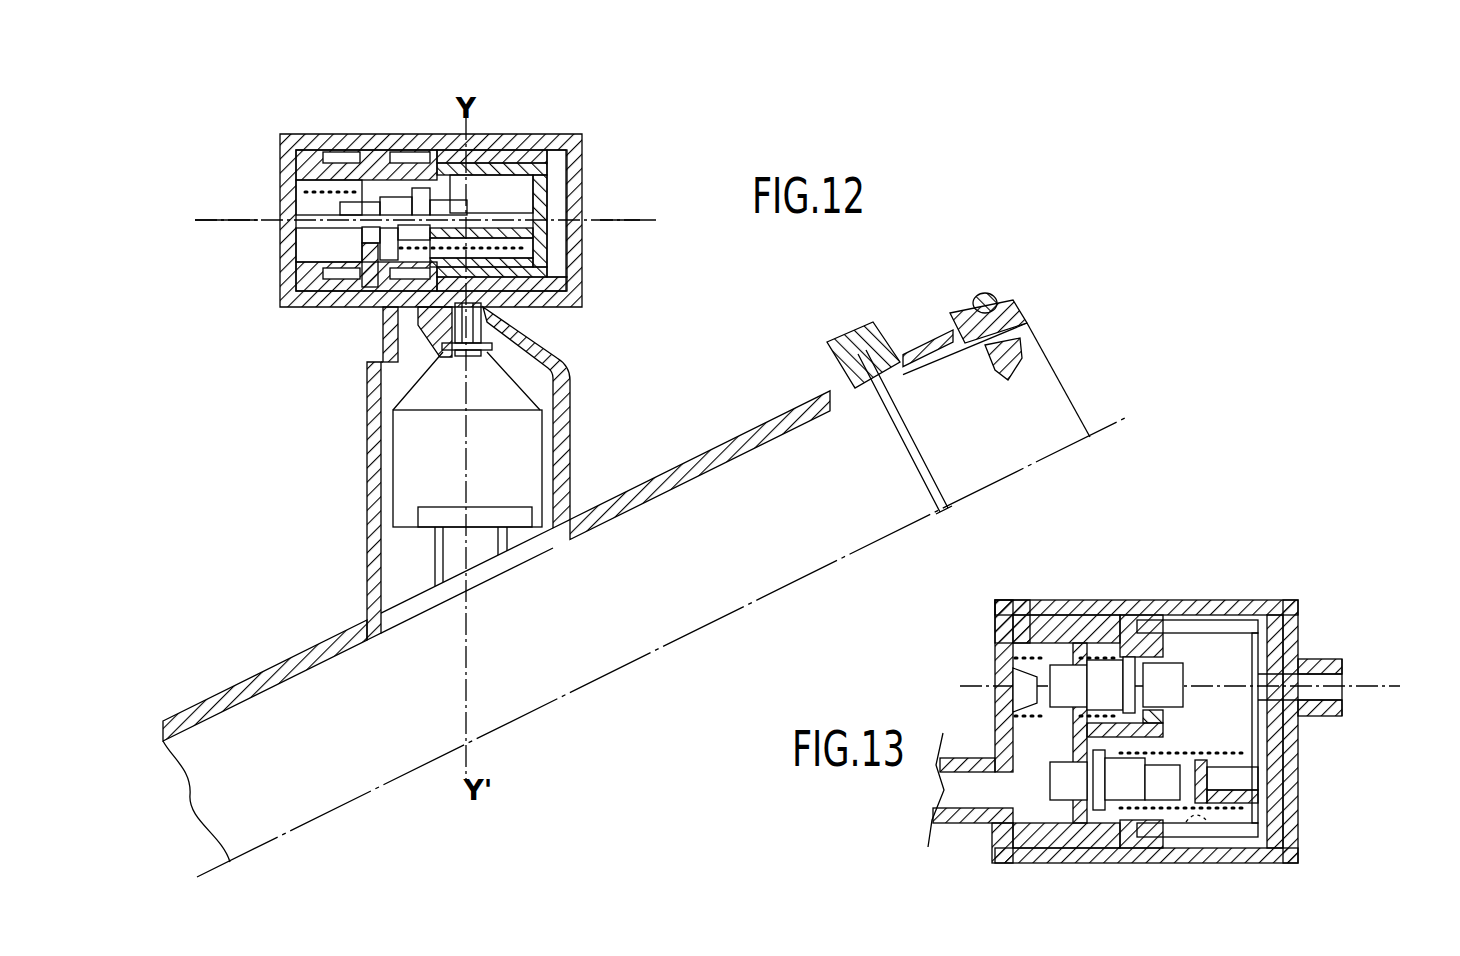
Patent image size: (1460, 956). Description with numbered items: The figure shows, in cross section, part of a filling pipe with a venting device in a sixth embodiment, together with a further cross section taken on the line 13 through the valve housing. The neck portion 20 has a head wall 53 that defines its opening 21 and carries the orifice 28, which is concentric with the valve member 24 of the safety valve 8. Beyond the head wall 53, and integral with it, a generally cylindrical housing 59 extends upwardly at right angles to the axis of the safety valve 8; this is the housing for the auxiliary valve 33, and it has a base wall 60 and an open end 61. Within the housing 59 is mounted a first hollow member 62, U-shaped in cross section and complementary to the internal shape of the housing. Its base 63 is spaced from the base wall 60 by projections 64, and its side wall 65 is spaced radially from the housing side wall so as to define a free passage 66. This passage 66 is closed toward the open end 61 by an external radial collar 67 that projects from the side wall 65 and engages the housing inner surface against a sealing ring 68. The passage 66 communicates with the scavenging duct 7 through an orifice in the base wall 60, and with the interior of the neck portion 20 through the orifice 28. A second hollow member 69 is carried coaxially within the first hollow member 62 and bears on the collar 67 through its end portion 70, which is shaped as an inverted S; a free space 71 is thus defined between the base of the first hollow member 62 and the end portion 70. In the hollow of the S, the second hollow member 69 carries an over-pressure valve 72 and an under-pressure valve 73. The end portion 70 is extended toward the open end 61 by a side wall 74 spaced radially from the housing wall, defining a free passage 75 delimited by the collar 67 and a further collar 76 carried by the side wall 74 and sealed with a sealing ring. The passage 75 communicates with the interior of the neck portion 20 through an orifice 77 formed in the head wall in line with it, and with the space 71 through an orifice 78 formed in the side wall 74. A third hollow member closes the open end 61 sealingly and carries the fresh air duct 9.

In FIG. 13, the scavenging duct 7 is at (1300, 667).
In FIG. 12, the safety valve 8 is at (345, 492).
In FIG. 13, the fresh air duct 9 is at (975, 772).
In FIG. 12, the section line 13— 13 is at (210, 217).
In FIG. 12, the neck portion 20 is at (568, 450).
In FIG. 12, the opening 21 is at (527, 370).
In FIG. 12, the valve member 24 is at (492, 457).
In FIG. 12, the orifice 28 is at (475, 295).
In FIG. 13, the orifice 28 is at (1195, 835).
In FIG. 12, the auxiliary valve 33 is at (250, 262).
In FIG. 12, the head wall 53 is at (510, 318).
In FIG. 12, the housing 59 is at (590, 178).
In FIG. 12, the base wall 60 is at (582, 240).
In FIG. 12, the open end 61 is at (297, 168).
In FIG. 12, the first hollow member 62 is at (582, 268).
In FIG. 13, the first hollow member 62 is at (1260, 632).
In FIG. 12, the base 63 is at (560, 175).
In FIG. 13, the base 63 is at (1262, 727).
In FIG. 13, the projections 64 is at (1290, 645).
In FIG. 12, the side wall 65 is at (495, 165).
In FIG. 12, the free passage 66 is at (520, 163).
In FIG. 13, the free passage 66 is at (1277, 770).
In FIG. 12, the external radial collar 67 is at (415, 165).
In FIG. 12, the sealing ring 68 is at (470, 160).
In FIG. 12, the second hollow member 69 is at (392, 150).
In FIG. 13, the second hollow member 69 is at (1285, 690).
In FIG. 13, the end portion 70 is at (1168, 632).
In FIG. 12, the free space 71 is at (515, 195).
In FIG. 13, the over-pressure valve 72 is at (1170, 673).
In FIG. 13, the under-pressure valve 73 is at (1063, 773).
In FIG. 13, the side wall 74 is at (1118, 630).
In FIG. 12, the free passage 75 is at (405, 160).
In FIG. 13, the free passage 75 is at (1113, 840).
In FIG. 13, the collar 76 is at (1075, 615).
In FIG. 12, the orifice 77 is at (412, 326).
In FIG. 12, the orifice 78 is at (382, 312).